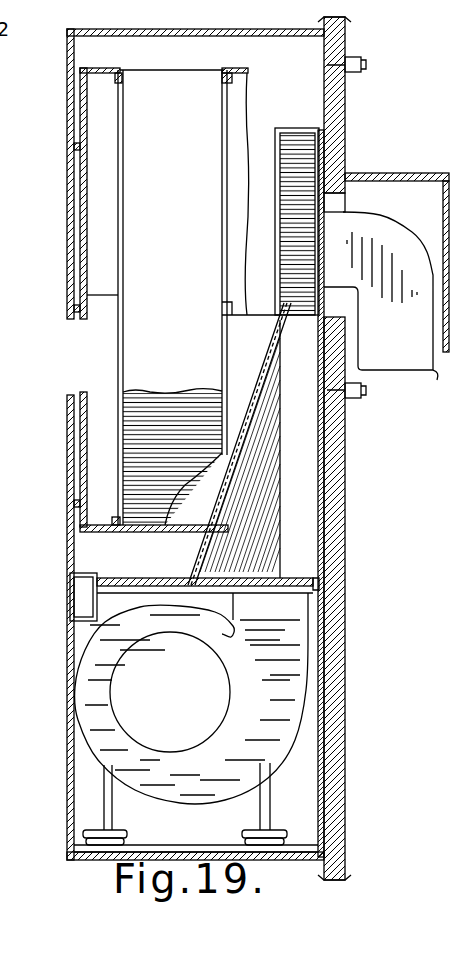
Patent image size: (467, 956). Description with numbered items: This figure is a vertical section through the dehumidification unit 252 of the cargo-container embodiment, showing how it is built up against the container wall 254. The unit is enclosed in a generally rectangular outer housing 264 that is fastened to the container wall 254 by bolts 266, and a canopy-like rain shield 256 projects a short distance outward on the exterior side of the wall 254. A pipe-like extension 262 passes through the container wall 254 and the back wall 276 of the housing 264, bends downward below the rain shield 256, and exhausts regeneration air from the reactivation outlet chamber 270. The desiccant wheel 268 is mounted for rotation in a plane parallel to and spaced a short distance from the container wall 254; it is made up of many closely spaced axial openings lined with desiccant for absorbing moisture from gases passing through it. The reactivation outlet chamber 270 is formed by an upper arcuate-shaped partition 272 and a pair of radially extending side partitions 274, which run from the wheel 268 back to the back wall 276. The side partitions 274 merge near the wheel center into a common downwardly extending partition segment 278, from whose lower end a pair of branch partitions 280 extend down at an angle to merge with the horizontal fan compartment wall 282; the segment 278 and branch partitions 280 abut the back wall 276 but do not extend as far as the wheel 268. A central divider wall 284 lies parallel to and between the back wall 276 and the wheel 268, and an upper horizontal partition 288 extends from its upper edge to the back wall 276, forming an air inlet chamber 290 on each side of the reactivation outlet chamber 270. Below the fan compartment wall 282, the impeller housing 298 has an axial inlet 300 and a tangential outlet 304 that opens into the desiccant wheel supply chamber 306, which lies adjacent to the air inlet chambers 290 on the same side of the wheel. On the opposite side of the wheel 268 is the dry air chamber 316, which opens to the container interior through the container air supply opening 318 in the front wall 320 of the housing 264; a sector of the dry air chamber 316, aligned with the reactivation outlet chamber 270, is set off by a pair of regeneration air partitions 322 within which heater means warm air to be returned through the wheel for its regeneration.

The dehumidification unit 252 is at (50, 590).
The container wall 254 is at (338, 100).
The rain shield 256 is at (392, 175).
The pipe-like extension 262 is at (436, 388).
The outer housing 264 is at (72, 125).
The bolts 266 is at (361, 64).
The desiccant wheel 268 is at (148, 80).
The reactivation outlet chamber 270 is at (245, 198).
The upper arcuate-shaped partition 272 is at (245, 71).
The radially extending side partitions 274 is at (280, 80).
The back wall 276 is at (322, 455).
The downwardly extending partition segment 278 is at (296, 335).
The branch partitions 280 is at (297, 388).
The fan compartment wall 282 is at (123, 577).
The central divider wall 284 is at (250, 160).
The upper horizontal partition 288 is at (290, 131).
The air inlet chamber 290 is at (300, 478).
The impeller housing 298 is at (88, 745).
The axial inlet 300 is at (228, 698).
The tangential outlet 304 is at (284, 594).
The desiccant wheel supply chamber 306 is at (228, 345).
The dry air chamber 316 is at (95, 428).
The container air supply opening 318 is at (77, 351).
The front wall 320 is at (70, 226).
The regeneration air partitions 322 is at (109, 141).